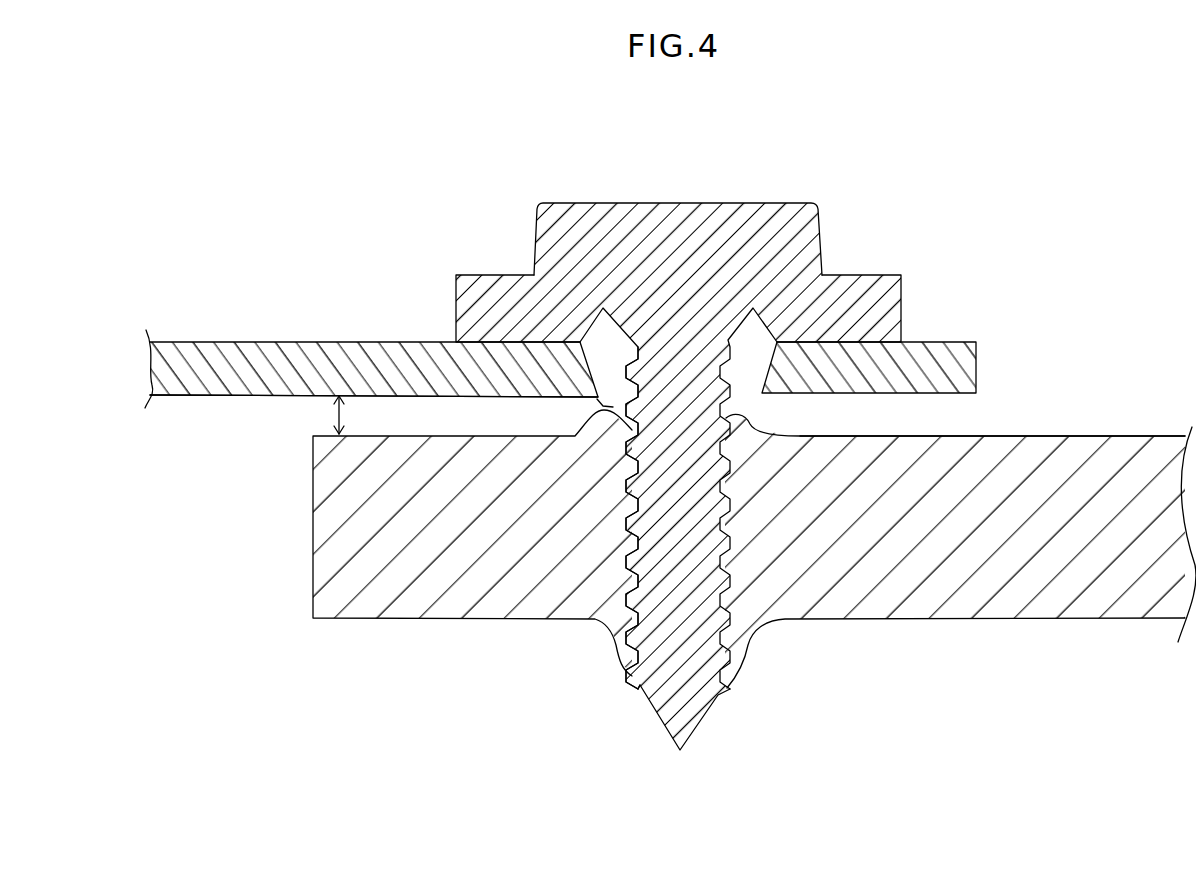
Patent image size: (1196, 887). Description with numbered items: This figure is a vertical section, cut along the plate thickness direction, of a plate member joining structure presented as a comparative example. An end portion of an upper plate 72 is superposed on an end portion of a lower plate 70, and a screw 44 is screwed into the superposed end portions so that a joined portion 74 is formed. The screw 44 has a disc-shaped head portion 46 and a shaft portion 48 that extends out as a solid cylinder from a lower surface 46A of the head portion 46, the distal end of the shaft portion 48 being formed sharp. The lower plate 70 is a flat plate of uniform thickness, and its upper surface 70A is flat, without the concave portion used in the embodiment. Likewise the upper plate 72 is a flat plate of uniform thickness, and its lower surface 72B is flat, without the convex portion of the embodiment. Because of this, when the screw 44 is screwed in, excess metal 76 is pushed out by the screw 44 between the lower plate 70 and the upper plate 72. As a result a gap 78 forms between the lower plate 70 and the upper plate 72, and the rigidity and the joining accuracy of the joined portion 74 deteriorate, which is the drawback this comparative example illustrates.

The screw 44 is at (790, 200).
The head portion 46 is at (813, 203).
The lower surface of the head portion 46A is at (968, 398).
The shaft portion 48 is at (695, 684).
The lower plate 70 is at (1099, 621).
The upper surface of the lower plate 70A is at (1100, 436).
The upper plate 72 is at (212, 337).
The lower surface of the upper plate 72B is at (292, 400).
The joined portion 74 is at (799, 656).
The excess metal 76 is at (603, 308).
The gap 78 is at (339, 415).